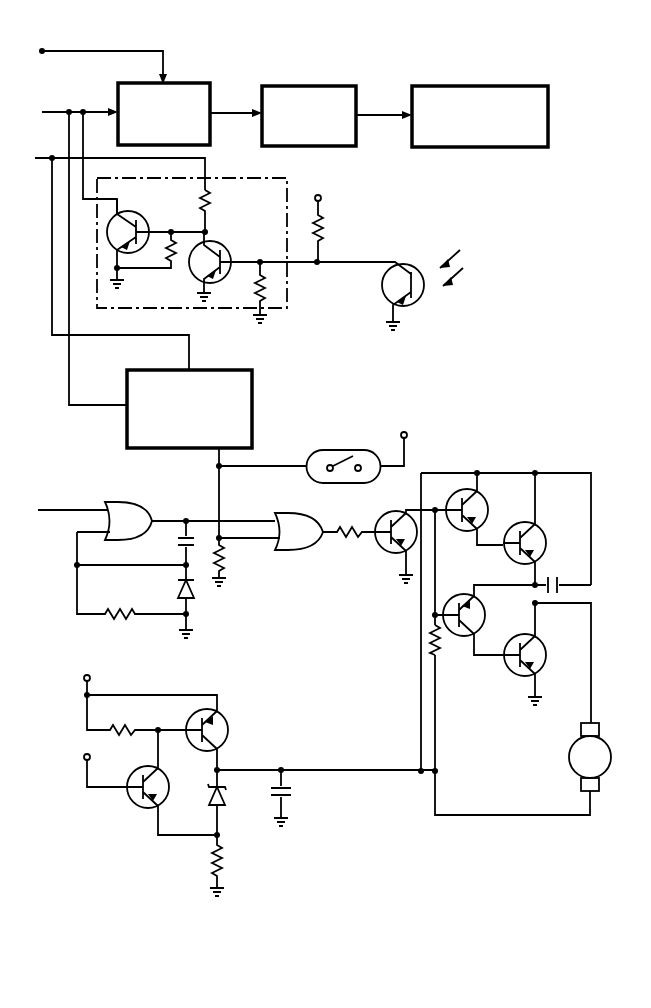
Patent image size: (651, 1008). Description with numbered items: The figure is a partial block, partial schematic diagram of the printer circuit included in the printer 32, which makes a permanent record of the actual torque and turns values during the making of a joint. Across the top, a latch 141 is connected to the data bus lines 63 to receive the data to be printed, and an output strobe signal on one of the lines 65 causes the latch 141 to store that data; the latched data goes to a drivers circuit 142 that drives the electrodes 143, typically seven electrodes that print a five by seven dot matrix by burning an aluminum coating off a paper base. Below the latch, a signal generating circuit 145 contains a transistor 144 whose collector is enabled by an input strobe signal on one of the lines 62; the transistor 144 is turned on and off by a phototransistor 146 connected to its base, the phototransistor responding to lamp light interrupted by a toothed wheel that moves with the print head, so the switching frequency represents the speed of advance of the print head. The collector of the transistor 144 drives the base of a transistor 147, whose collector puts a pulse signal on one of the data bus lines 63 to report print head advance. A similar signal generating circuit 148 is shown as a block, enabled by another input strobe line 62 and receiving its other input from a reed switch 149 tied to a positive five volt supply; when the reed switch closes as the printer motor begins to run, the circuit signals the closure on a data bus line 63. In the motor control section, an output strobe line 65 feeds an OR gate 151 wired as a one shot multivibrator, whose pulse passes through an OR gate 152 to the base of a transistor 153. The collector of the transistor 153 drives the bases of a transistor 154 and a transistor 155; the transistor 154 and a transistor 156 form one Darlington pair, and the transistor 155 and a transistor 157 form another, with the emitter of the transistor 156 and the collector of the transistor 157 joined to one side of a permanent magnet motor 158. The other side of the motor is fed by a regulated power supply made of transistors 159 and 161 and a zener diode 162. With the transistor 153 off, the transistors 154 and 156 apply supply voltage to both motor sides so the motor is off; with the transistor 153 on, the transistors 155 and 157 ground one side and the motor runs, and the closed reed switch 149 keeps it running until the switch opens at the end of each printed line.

The printer 32 is at (492, 42).
The input strobe lines 62 is at (50, 158).
The data bus lines 63 is at (47, 110).
The output strobe lines 65 is at (86, 51).
The latch 141 is at (191, 92).
The drivers circuit 142 is at (327, 92).
The electrodes 143 is at (531, 96).
The transistor 144 is at (217, 240).
The signal generating circuit 145 is at (288, 180).
The phototransistor 146 is at (408, 265).
The transistor 147 is at (130, 213).
The signal generating circuit 148 is at (189, 409).
The reed switch 149 is at (350, 450).
The OR gate 151 is at (130, 510).
The OR gate 152 is at (271, 515).
The transistor 153 is at (390, 514).
The transistor 154 is at (484, 478).
The transistor 155 is at (462, 645).
The transistor 156 is at (536, 525).
The transistor 157 is at (545, 664).
The permanent magnet motor 158 is at (570, 774).
The transistor 159 is at (220, 732).
The transistor 161 is at (140, 806).
The zener diode 162 is at (228, 805).